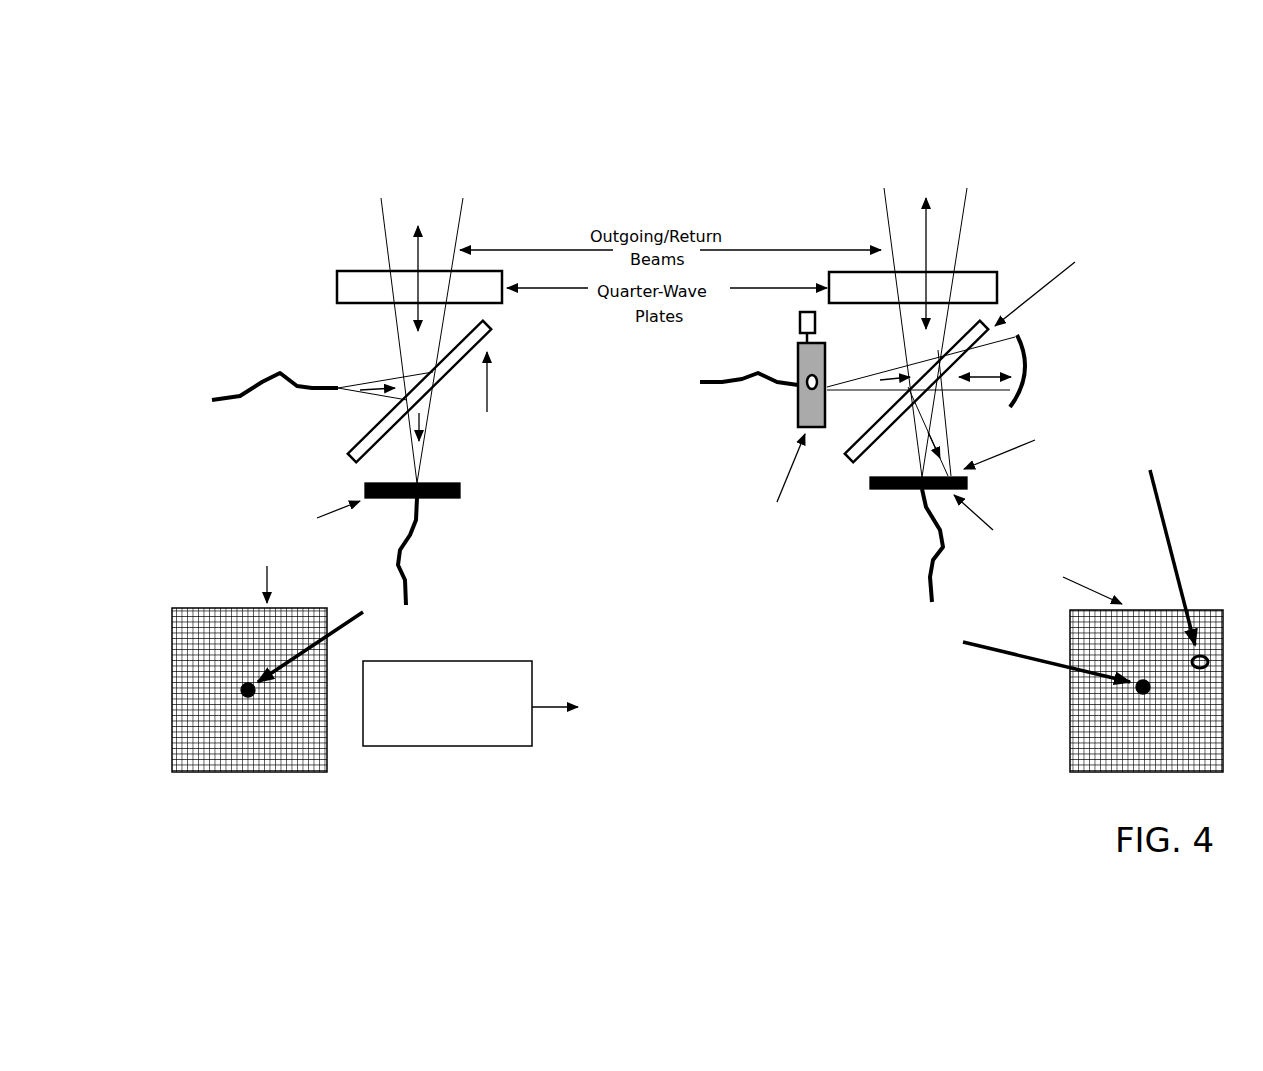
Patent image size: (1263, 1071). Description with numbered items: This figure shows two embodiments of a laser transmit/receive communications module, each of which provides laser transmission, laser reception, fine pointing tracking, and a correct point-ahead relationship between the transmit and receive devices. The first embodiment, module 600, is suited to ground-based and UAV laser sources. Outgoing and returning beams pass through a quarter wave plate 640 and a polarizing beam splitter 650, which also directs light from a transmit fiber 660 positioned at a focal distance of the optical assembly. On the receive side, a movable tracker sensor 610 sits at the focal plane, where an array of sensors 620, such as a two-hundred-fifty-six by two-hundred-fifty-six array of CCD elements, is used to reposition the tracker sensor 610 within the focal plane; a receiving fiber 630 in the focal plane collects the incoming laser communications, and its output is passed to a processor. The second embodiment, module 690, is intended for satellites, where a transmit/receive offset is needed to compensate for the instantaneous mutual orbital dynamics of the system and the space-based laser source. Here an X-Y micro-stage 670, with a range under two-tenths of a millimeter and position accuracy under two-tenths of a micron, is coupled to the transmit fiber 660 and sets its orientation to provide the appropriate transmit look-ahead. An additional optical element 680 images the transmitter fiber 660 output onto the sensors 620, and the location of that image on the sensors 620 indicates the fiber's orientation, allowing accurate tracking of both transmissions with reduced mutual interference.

The module 600 is at (497, 113).
The movable tracker sensor 610 is at (460, 490).
The array of sensors 620 is at (327, 753).
The receiving fiber 630 is at (417, 518).
The quarter wave plate 640 is at (355, 273).
The polarizing beam splitter 650 is at (493, 330).
The transmit fiber 660 is at (337, 388).
The X-Y micro-stage 670 is at (798, 372).
The additional optical element 680 is at (1122, 348).
The module 690 is at (1032, 120).